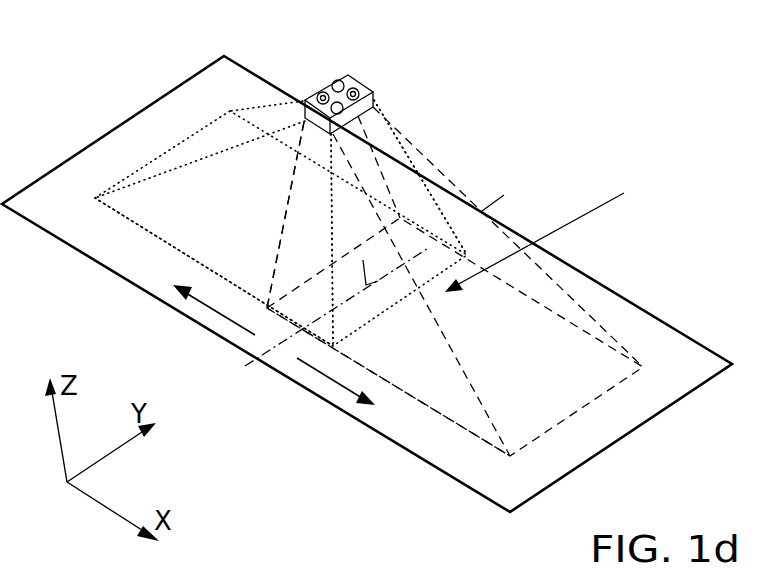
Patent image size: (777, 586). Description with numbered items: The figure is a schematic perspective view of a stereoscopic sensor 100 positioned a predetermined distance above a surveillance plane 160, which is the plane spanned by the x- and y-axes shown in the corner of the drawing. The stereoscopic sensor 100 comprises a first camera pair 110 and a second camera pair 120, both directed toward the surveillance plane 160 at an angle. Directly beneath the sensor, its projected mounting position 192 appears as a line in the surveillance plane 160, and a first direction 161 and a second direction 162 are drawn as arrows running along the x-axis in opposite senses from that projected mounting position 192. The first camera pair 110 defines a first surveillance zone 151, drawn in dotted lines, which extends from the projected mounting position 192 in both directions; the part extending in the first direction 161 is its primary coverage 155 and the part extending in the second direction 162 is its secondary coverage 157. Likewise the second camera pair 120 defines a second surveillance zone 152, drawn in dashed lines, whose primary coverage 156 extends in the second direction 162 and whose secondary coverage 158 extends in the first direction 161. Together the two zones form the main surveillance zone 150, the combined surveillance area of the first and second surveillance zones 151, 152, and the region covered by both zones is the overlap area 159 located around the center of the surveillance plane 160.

The stereoscopic sensor 100 is at (336, 71).
The first camera pair 110 is at (348, 80).
The second camera pair 120 is at (362, 100).
The main surveillance zone 150 is at (555, 237).
The first surveillance zone 151 is at (125, 174).
The second surveillance zone 152 is at (400, 393).
The primary coverage 155 is at (180, 230).
The primary coverage 156 is at (462, 408).
The secondary coverage 157 is at (285, 308).
The secondary coverage 158 is at (320, 327).
The overlap area 159 is at (437, 268).
The surveillance plane 160 is at (657, 316).
The first direction 161 is at (200, 305).
The second direction 162 is at (305, 364).
The projected mounting position 192 is at (247, 366).